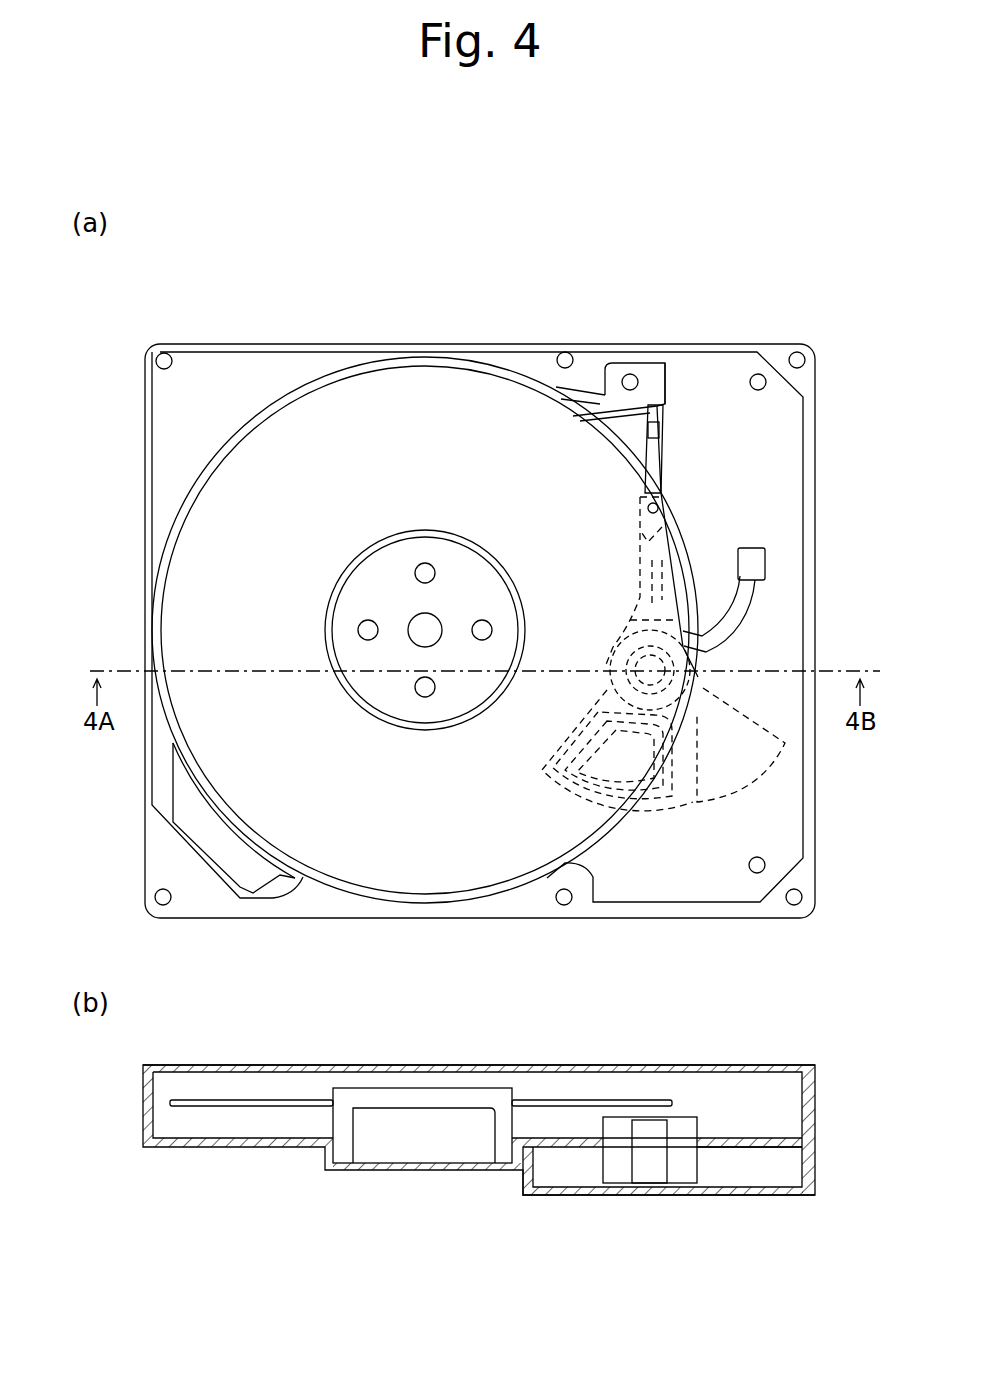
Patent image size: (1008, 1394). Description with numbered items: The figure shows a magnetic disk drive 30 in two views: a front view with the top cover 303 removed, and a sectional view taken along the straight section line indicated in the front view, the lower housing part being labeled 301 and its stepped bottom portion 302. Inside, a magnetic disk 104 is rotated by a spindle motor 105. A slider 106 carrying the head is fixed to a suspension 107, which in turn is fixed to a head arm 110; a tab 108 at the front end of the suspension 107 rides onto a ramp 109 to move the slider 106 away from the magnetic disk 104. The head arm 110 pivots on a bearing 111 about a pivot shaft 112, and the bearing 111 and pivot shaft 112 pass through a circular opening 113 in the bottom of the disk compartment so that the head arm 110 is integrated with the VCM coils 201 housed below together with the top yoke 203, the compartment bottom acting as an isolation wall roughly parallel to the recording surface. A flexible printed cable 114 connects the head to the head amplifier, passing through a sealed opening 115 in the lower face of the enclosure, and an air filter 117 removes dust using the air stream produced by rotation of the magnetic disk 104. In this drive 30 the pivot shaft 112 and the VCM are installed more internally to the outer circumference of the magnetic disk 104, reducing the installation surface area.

The magnetic disk drive 30 is at (305, 281).
The magnetic disk 104 is at (205, 612).
The spindle motor 105 is at (406, 549).
The slider 106 is at (660, 431).
The suspension 107 is at (658, 470).
The tab 108 is at (668, 377).
The ramp 109 is at (622, 358).
The head arm 110 is at (653, 530).
The bearing 111 is at (650, 670).
The pivot shaft 112 is at (652, 1176).
The circular opening 113 is at (700, 1132).
The flexible printed cable 114 is at (713, 636).
The opening 115 is at (758, 560).
The air filter 117 is at (171, 806).
The VCM coils 201 is at (652, 800).
The top yoke 203 is at (735, 787).
The base 301 is at (452, 353).
The base bottom recess 302 is at (521, 1186).
The top cover 303 is at (455, 1066).